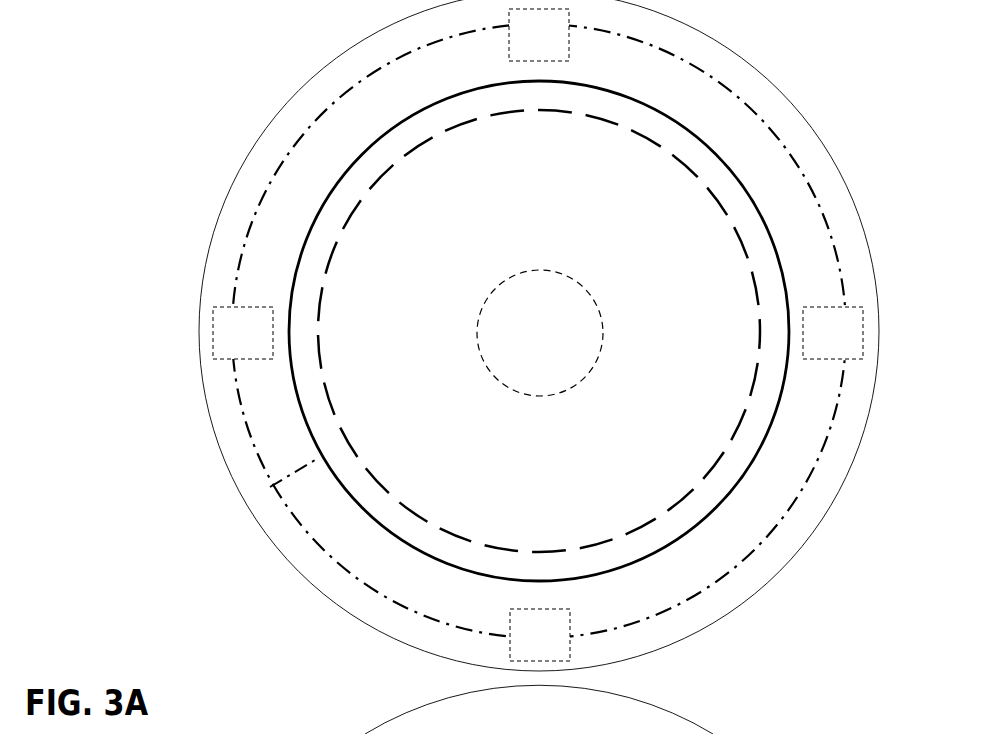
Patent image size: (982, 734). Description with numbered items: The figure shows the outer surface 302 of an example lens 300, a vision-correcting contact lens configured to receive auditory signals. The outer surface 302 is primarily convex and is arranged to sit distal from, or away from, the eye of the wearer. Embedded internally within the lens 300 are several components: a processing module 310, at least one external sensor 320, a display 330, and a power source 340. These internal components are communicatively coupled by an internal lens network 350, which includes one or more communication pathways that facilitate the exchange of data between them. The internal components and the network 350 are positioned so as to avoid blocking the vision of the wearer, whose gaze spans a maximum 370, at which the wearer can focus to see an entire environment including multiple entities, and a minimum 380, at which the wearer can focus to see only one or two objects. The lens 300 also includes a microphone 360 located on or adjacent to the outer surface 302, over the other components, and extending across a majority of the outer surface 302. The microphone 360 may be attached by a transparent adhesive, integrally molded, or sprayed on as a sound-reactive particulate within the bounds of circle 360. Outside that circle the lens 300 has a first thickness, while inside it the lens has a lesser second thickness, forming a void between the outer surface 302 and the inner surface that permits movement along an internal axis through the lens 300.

The lens 300 is at (838, 635).
The outer surface 302 is at (173, 500).
The processing module 310 is at (559, 47).
The external sensor 320 is at (263, 345).
The display 330 is at (853, 345).
The power source 340 is at (560, 647).
The internal lens network 350 is at (300, 468).
The microphone 360 is at (612, 574).
The maximum 370 is at (340, 425).
The minimum 380 is at (560, 344).